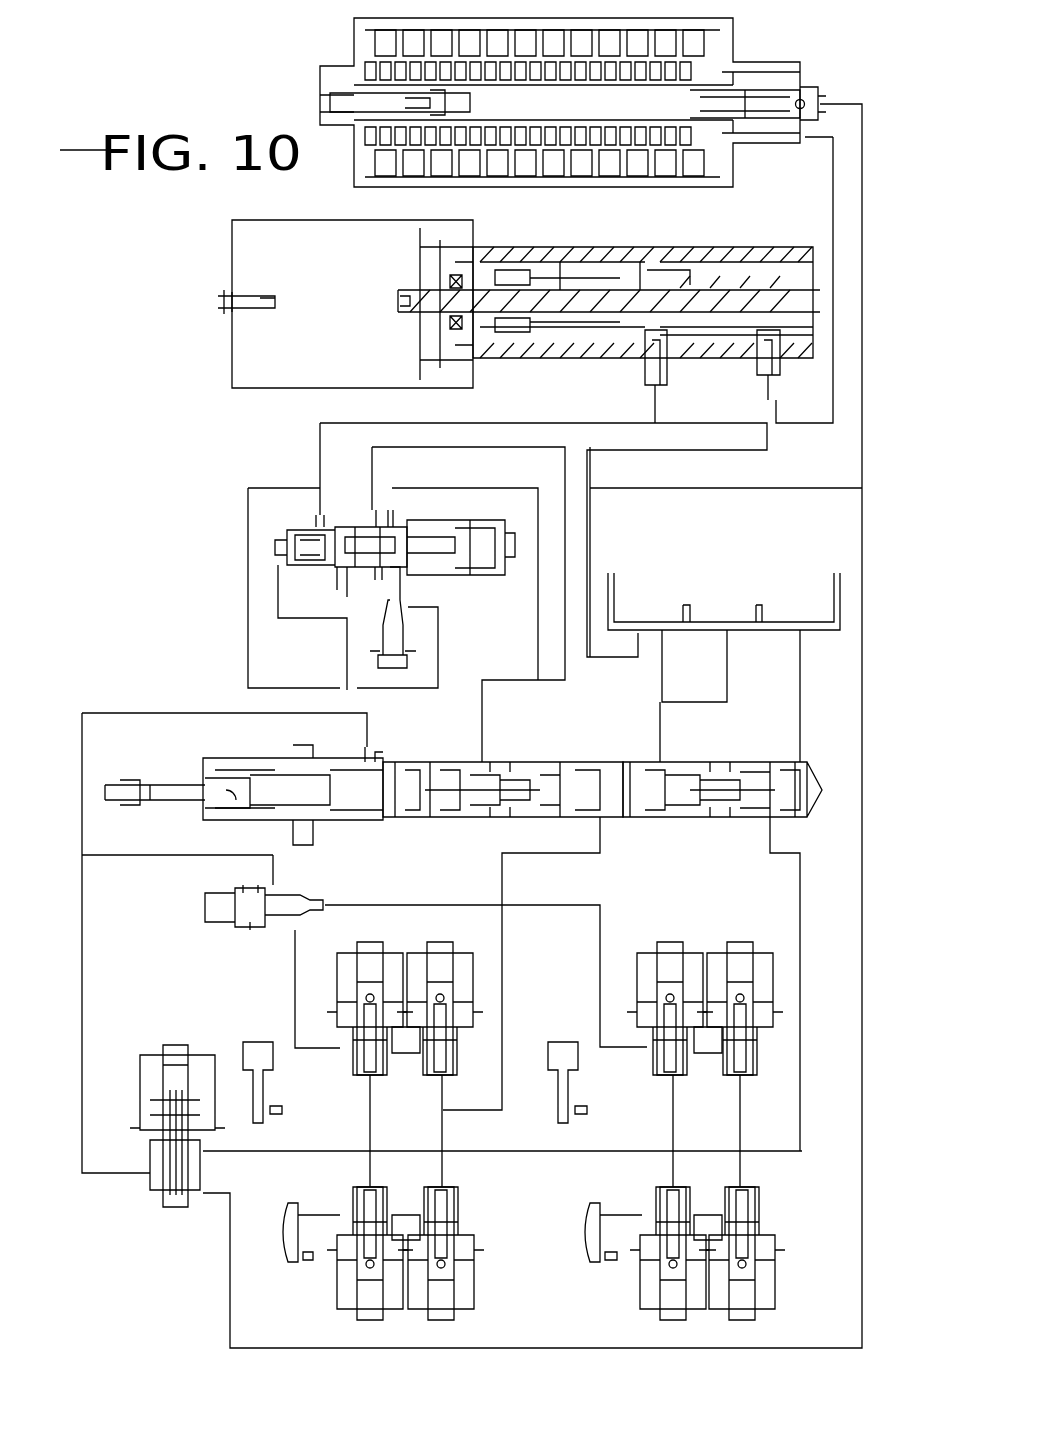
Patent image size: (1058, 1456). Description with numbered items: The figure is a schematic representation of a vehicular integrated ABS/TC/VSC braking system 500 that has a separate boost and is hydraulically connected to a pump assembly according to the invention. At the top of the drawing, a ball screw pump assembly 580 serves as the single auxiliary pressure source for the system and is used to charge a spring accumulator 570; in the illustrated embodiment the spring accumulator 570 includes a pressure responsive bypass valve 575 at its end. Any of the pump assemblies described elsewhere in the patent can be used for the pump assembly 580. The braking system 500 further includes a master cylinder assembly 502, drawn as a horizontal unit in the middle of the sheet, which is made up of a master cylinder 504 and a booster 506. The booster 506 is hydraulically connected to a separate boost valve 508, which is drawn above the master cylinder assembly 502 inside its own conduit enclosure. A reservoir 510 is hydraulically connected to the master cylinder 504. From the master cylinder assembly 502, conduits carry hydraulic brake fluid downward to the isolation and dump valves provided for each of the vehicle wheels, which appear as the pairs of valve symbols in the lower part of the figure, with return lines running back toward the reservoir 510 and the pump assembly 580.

The vehicular integrated ABS/TC/VSC braking system 500 is at (215, 487).
The master cylinder assembly 502 is at (253, 757).
The master cylinder 504 is at (642, 760).
The booster 506 is at (440, 735).
The boost valve 508 is at (468, 588).
The reservoir 510 is at (603, 597).
The spring accumulator 570 is at (354, 50).
The pressure responsive bypass valve 575 is at (770, 62).
The ball screw pump assembly 580 is at (680, 246).